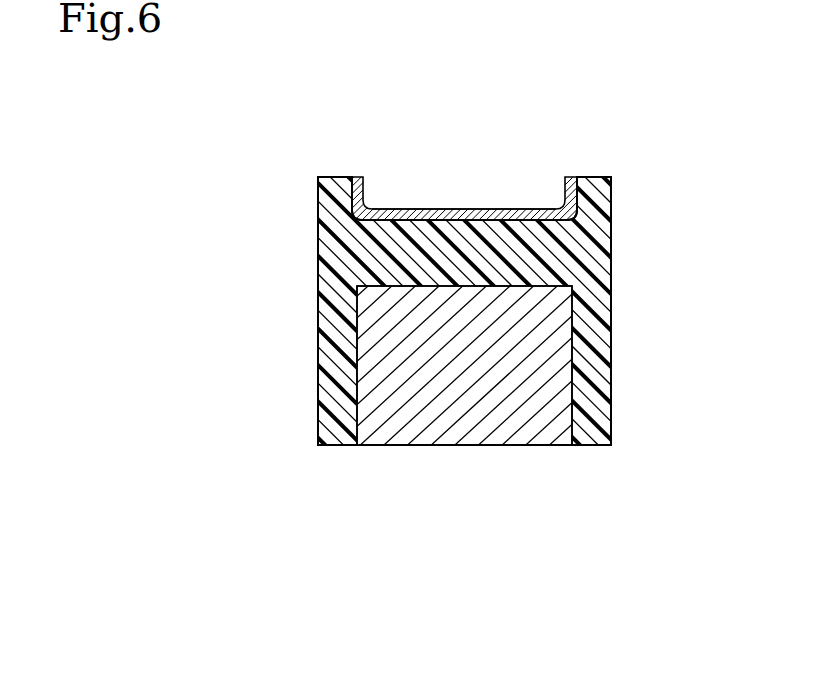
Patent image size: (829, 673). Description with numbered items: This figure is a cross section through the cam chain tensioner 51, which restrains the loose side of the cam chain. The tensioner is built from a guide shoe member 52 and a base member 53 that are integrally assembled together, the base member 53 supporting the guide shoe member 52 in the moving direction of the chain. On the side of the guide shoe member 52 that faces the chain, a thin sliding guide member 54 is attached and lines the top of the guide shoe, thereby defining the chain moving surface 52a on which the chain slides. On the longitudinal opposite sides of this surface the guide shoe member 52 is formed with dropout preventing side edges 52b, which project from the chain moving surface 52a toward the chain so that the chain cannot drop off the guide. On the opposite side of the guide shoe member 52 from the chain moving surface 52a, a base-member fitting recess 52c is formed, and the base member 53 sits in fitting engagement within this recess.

The cam chain tensioner 51 is at (386, 160).
The guide shoe member 52 is at (318, 314).
The chain moving surface 52a is at (450, 207).
The dropout preventing side edge 52b is at (320, 204).
The base-member fitting recess 52c is at (504, 287).
The base member 53 is at (403, 436).
The sliding guide member 54 is at (502, 207).